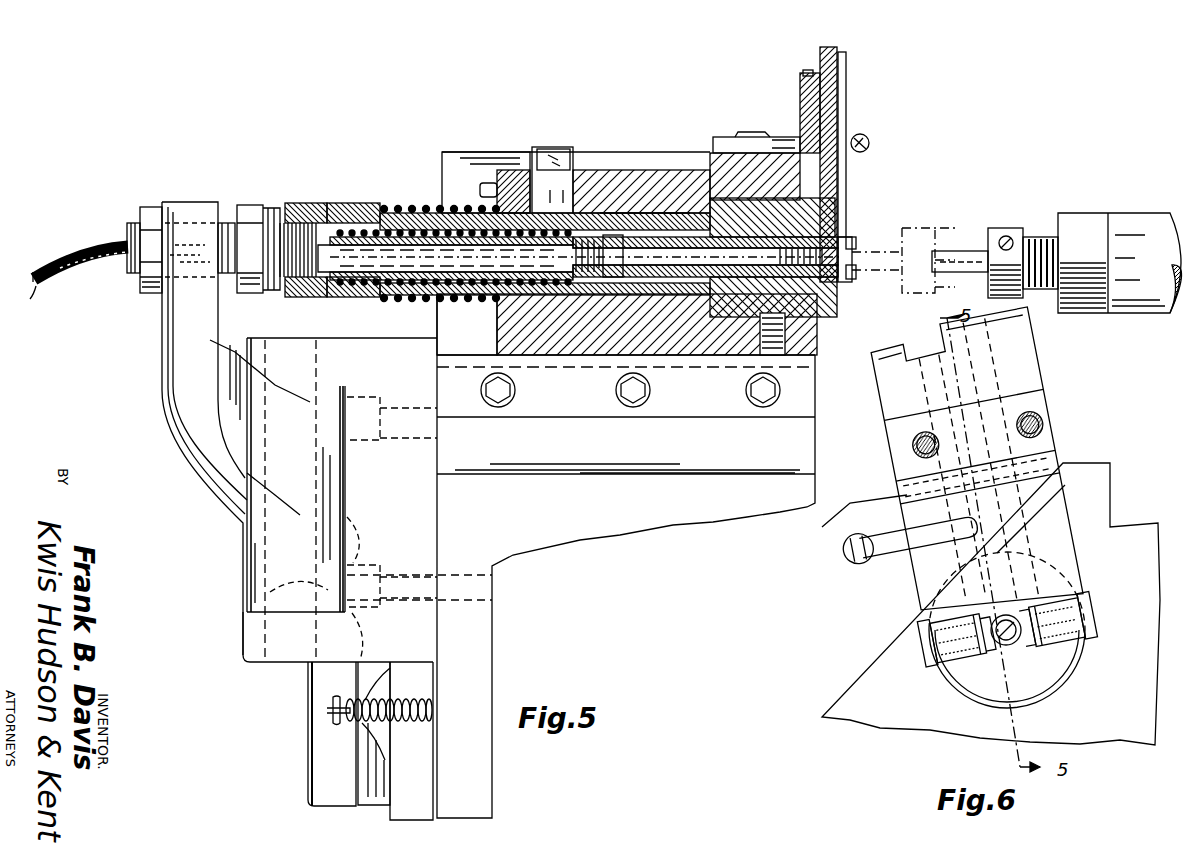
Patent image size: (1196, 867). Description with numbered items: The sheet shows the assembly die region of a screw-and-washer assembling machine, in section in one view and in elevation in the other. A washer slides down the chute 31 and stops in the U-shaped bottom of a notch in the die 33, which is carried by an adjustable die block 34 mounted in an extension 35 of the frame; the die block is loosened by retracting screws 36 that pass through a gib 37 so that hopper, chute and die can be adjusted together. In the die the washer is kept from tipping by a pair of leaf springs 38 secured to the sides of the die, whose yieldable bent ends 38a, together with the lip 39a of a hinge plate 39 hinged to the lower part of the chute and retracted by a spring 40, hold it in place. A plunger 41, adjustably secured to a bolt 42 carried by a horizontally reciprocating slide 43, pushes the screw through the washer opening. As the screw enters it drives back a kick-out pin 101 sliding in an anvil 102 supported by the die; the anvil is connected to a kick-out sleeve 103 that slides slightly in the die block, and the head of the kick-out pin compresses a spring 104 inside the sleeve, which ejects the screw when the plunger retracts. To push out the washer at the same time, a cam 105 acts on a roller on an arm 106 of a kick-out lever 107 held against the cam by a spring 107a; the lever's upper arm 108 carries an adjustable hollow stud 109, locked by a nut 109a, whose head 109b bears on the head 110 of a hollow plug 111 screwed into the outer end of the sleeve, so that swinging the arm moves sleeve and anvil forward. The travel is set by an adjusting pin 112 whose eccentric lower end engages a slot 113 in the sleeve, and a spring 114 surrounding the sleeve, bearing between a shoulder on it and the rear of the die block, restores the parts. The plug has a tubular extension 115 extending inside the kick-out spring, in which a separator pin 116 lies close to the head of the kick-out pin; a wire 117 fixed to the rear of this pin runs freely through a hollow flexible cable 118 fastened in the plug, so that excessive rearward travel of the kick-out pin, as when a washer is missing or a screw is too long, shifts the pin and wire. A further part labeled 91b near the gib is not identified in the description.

In FIG. 5, the chute 31 is at (846, 65).
In FIG. 6, the chute 31 is at (1040, 376).
In FIG. 5, the die 33 is at (832, 302).
In FIG. 6, the die 33 is at (1060, 678).
In FIG. 5, the die block 34 is at (636, 176).
In FIG. 5, the extension 35 is at (812, 453).
In FIG. 5, the screws 36 is at (633, 402).
In FIG. 5, the gib 37 is at (815, 399).
In FIG. 5, the leaf springs 38 is at (857, 276).
In FIG. 6, the leaf springs 38 is at (955, 660).
In FIG. 5, the bent ends 38a is at (855, 242).
In FIG. 6, the bent ends 38a is at (982, 652).
In FIG. 5, the hinge plate 39 is at (850, 224).
In FIG. 6, the hinge plate 39 is at (1075, 552).
In FIG. 6, the lip 39a is at (1005, 614).
In FIG. 6, the spring 40 is at (858, 560).
In FIG. 5, the plunger 41 is at (975, 254).
In FIG. 5, the bolt 42 is at (1040, 237).
In FIG. 5, the slide 43 is at (1120, 227).
In FIG. 5, the gasket 91b is at (815, 418).
In FIG. 5, the kick-out pin 101 is at (629, 268).
In FIG. 5, the anvil 102 is at (814, 320).
In FIG. 5, the kick-out sleeve 103 is at (690, 213).
In FIG. 5, the spring 104 is at (612, 213).
In FIG. 5, the cam 105 is at (420, 797).
In FIG. 5, the arm 106 is at (308, 763).
In FIG. 5, the kick-out lever 107 is at (245, 558).
In FIG. 5, the spring 107a is at (405, 722).
In FIG. 5, the upper arm 108 is at (160, 382).
In FIG. 5, the adjustable hollow stud 109 is at (228, 221).
In FIG. 5, the nut 109a is at (156, 292).
In FIG. 5, the head 109b is at (252, 295).
In FIG. 5, the head 110 is at (300, 205).
In FIG. 5, the hollow plug 111 is at (330, 215).
In FIG. 5, the adjusting pin 112 is at (538, 168).
In FIG. 5, the slot 113 is at (506, 198).
In FIG. 5, the spring 114 is at (410, 206).
In FIG. 5, the tubular extension 115 is at (470, 298).
In FIG. 5, the separator pin 116 is at (402, 300).
In FIG. 5, the wire 117 is at (48, 288).
In FIG. 5, the hollow flexible cable 118 is at (92, 264).